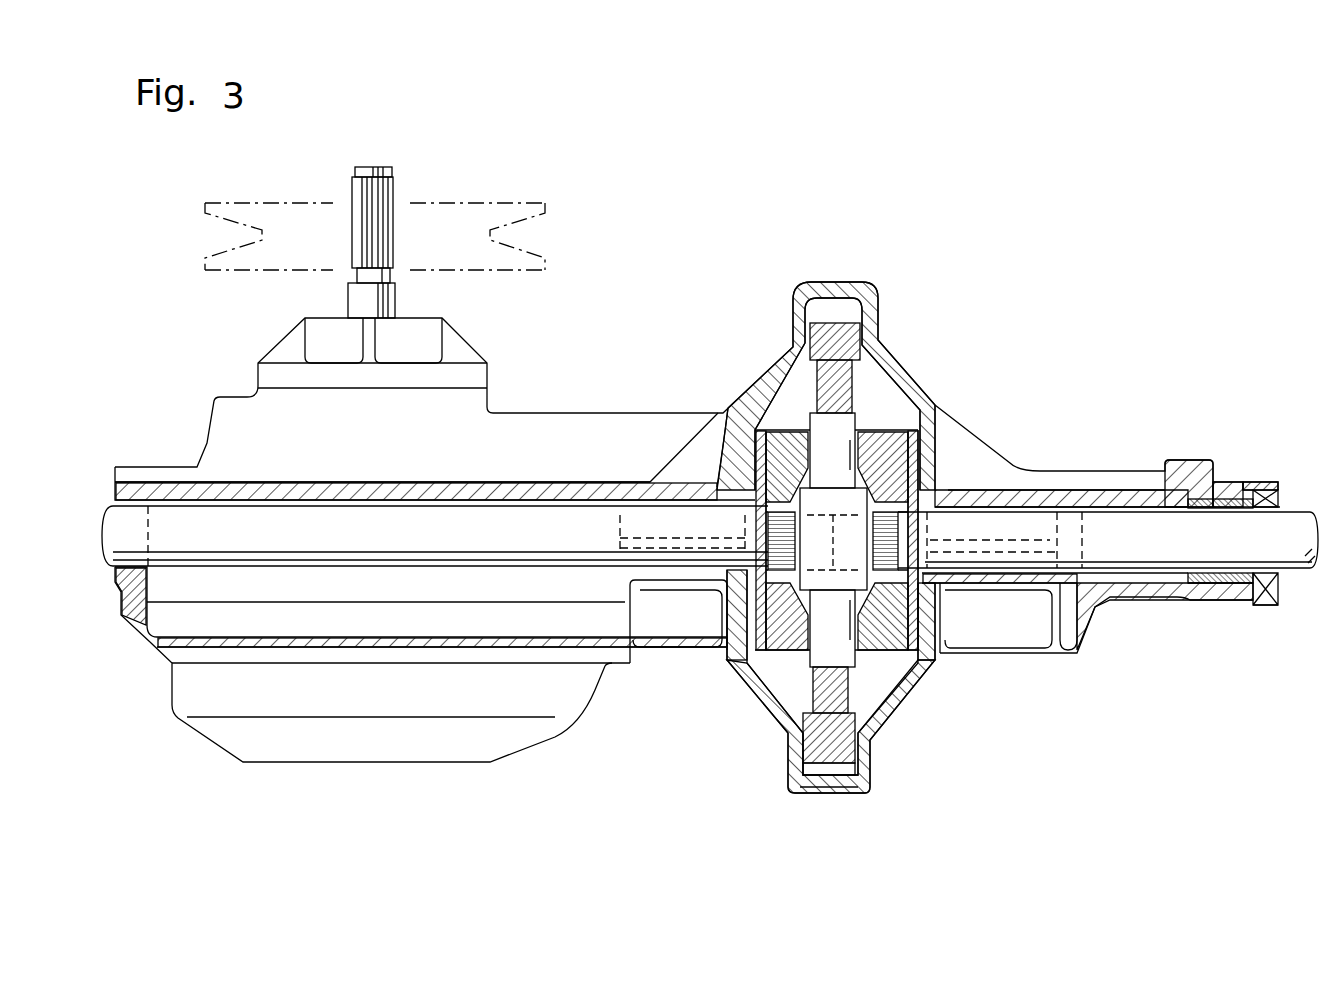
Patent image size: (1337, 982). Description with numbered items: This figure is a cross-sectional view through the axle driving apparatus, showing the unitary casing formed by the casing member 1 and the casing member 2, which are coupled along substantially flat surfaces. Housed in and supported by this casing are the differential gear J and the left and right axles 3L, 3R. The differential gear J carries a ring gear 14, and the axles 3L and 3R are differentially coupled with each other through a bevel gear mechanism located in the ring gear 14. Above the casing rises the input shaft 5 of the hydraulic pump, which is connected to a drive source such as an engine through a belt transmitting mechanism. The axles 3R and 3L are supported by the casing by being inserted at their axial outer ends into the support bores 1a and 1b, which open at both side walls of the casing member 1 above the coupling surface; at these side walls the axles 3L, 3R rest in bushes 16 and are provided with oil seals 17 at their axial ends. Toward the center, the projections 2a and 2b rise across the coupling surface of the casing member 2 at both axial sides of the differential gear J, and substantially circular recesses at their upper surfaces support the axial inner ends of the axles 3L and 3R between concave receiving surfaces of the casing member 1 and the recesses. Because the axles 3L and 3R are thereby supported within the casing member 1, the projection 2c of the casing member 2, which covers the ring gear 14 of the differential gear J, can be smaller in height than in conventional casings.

The casing member 1 is at (590, 413).
The support bore 1a is at (140, 467).
The support bore 1b is at (1132, 507).
The casing member 2 is at (555, 737).
The projection 2a is at (678, 582).
The projection 2b is at (990, 583).
The projection 2c is at (843, 790).
The left axle 3L is at (386, 556).
The right axle 3R is at (1251, 565).
The input shaft 5 is at (393, 199).
The ring gear 14 is at (872, 345).
The bush 16 is at (1212, 603).
The oil seal 17 is at (1283, 592).
The differential gear J is at (882, 411).